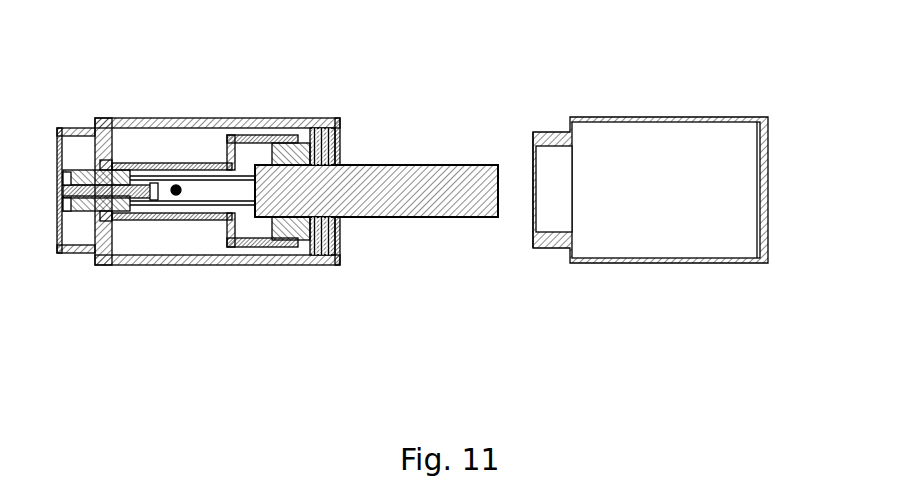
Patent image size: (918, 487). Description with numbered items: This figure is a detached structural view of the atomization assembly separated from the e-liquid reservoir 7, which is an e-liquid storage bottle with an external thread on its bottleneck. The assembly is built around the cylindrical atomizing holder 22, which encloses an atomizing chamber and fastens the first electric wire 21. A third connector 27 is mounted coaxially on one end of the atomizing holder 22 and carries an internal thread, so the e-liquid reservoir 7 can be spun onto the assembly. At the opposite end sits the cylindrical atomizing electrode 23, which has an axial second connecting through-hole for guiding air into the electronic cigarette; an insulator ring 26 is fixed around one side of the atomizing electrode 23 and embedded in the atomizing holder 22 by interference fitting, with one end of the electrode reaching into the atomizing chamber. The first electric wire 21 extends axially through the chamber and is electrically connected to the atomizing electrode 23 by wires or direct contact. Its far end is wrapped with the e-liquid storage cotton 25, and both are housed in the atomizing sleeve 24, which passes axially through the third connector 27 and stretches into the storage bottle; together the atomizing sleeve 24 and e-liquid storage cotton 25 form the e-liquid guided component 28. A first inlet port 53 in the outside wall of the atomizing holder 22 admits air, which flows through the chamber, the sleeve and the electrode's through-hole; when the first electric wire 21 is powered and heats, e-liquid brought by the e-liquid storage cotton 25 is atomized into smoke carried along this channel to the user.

The e-liquid reservoir 7 is at (612, 262).
The first electric wire 21 is at (178, 186).
The atomizing holder 22 is at (147, 264).
The atomizing electrode 23 is at (73, 188).
The atomizing sleeve 24 is at (250, 160).
The e-liquid storage cotton 25 is at (398, 168).
The insulator ring 26 is at (90, 170).
The third connector 27 is at (292, 226).
The e-liquid guided component 28 is at (418, 52).
The first inlet port 53 is at (200, 264).